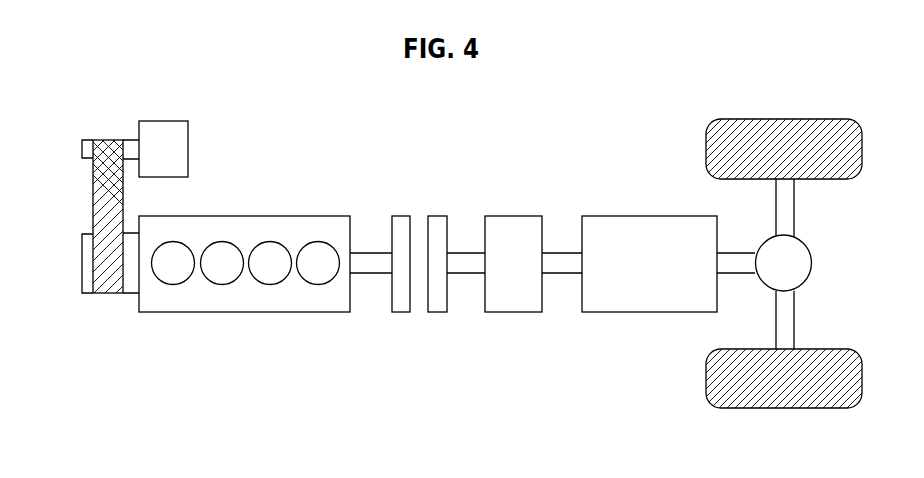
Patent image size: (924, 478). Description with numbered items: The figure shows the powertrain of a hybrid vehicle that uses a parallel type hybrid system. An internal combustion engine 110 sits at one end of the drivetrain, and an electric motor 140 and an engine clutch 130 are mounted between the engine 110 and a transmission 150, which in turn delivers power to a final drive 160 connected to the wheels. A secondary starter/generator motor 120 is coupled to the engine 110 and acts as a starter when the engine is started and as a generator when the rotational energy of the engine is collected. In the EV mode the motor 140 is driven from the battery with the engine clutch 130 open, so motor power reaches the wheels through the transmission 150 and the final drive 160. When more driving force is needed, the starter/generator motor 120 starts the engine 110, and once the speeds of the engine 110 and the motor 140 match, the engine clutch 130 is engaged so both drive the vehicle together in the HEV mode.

The internal combustion engine 110 is at (327, 215).
The starter/generator motor 120 is at (188, 125).
The engine clutch 130 is at (434, 215).
The electric motor 140 is at (512, 215).
The transmission 150 is at (645, 215).
The final drive 160 is at (812, 239).